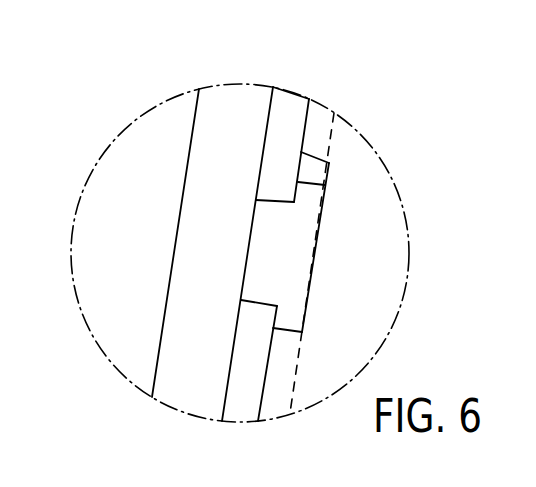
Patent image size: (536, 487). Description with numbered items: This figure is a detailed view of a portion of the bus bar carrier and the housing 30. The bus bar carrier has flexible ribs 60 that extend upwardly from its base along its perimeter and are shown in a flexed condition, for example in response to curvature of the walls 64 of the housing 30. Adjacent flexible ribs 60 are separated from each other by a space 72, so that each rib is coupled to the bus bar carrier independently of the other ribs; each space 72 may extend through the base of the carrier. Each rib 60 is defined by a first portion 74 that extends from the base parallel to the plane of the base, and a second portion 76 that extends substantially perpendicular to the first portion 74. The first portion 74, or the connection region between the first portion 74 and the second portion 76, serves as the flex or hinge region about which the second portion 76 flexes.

The housing 30 is at (160, 227).
The flexible ribs 60 is at (288, 101).
The walls 64 is at (197, 155).
The space 72 is at (297, 267).
The first portion 74 is at (318, 149).
The second portion 76 is at (329, 163).